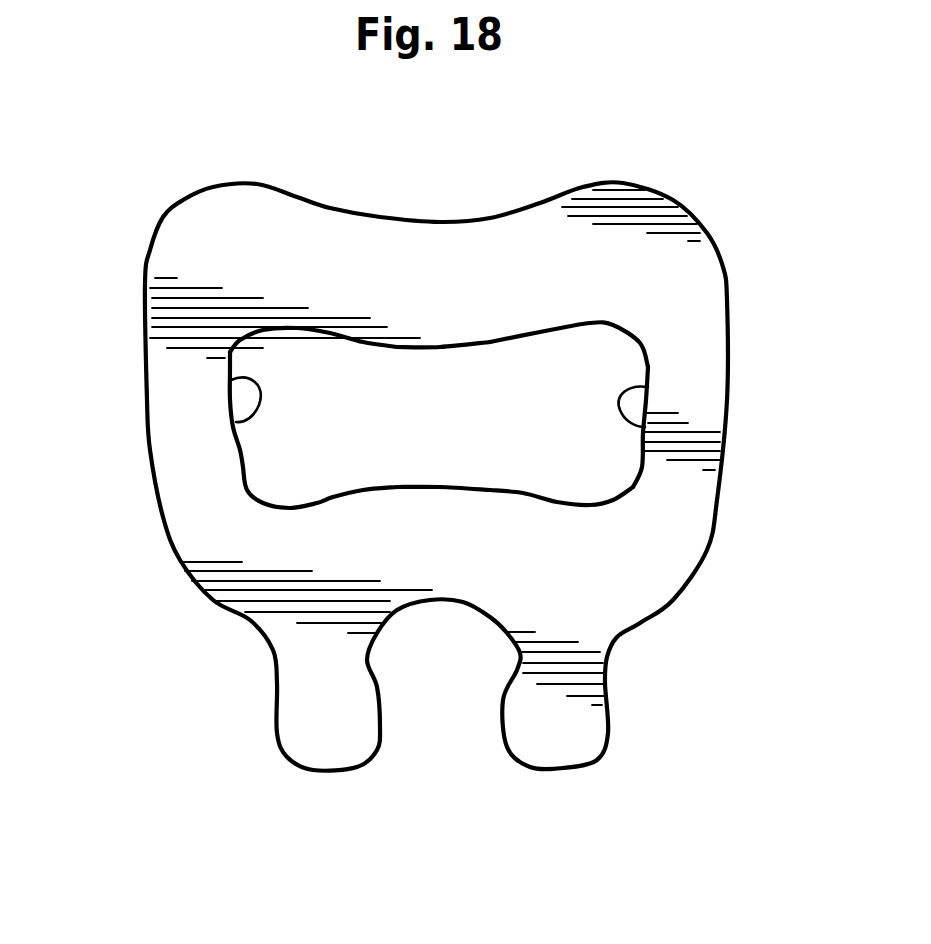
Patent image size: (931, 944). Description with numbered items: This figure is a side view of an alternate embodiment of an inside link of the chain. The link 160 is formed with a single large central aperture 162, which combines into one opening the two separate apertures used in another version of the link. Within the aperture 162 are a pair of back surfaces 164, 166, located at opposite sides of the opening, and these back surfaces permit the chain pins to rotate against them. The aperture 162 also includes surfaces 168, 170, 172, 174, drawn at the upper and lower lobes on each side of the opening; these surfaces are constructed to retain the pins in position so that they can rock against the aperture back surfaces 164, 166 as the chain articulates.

The link 160 is at (715, 233).
The large central aperture 162 is at (490, 340).
The back surface 164 is at (233, 379).
The back surface 166 is at (640, 390).
The surface 168 is at (330, 335).
The surface 170 is at (330, 500).
The surface 172 is at (607, 324).
The surface 174 is at (573, 500).